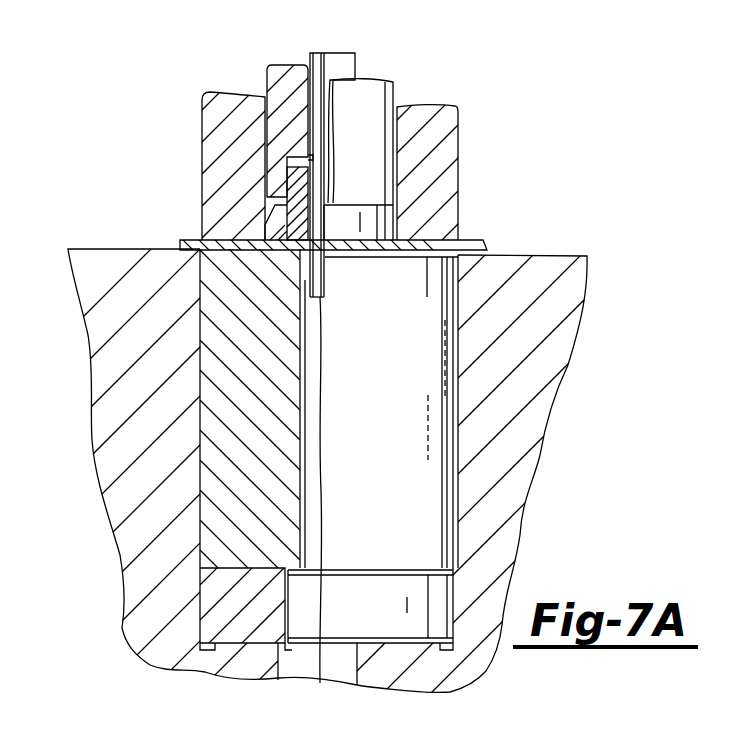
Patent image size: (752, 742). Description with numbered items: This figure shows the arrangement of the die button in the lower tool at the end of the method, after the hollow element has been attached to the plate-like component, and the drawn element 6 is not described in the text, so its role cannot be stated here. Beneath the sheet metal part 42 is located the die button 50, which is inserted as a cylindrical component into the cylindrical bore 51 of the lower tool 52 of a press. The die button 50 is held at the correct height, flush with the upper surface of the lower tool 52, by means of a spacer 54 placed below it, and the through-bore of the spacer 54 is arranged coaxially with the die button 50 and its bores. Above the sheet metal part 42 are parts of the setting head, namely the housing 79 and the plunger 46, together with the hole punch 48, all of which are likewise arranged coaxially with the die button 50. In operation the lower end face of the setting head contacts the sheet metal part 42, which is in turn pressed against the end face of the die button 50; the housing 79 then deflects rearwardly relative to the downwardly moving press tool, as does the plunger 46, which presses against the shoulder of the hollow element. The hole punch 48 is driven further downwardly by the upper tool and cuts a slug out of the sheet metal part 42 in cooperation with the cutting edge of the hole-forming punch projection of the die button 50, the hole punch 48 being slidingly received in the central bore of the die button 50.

The tube 6 is at (303, 386).
The sheet metal part 42 is at (180, 242).
The plunger 46 is at (397, 98).
The hole punch 48 is at (357, 69).
The die button 50 is at (200, 326).
The cylindrical bore 51 is at (453, 449).
The lower tool 52 is at (122, 626).
The spacer 54 is at (290, 614).
The housing 79 is at (203, 152).